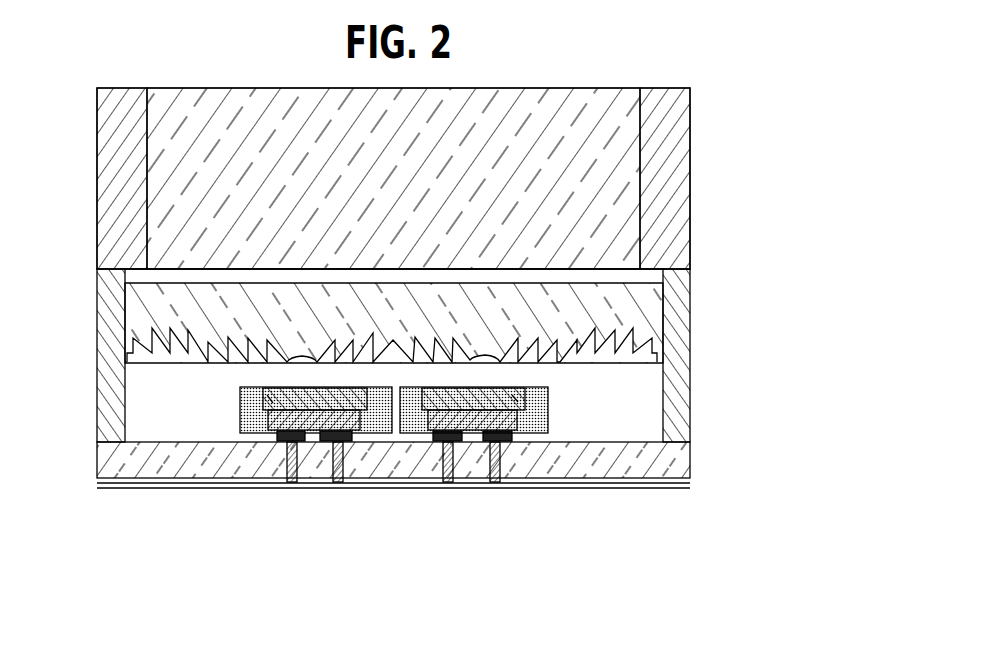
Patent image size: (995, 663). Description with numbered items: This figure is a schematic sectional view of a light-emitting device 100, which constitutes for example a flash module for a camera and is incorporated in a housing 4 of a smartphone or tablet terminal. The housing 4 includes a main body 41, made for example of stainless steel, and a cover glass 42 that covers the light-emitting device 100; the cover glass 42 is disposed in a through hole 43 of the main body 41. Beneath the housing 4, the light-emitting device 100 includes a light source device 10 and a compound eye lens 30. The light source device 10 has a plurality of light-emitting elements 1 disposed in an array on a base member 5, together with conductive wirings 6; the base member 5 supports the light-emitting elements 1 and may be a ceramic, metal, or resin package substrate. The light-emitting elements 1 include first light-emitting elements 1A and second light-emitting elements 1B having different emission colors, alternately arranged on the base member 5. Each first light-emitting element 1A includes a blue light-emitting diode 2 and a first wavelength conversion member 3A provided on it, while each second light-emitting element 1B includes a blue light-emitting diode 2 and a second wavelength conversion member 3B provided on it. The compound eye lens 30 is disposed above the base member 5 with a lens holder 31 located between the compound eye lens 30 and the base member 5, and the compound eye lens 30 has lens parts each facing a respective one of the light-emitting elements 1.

The housing 4 is at (453, 157).
The main body 41 is at (699, 178).
The cover glass 42 is at (570, 100).
The through hole 43 is at (147, 115).
The light-emitting device 100 is at (468, 424).
The lens holder 31 is at (680, 305).
The compound eye lens 30 is at (640, 320).
The base member 5 is at (667, 462).
The light source device 10 is at (393, 476).
The light-emitting element 1 is at (403, 452).
The first light-emitting element 1A is at (280, 388).
The second light-emitting element 1B is at (503, 388).
The blue light-emitting diode 2 is at (300, 432).
The first wavelength conversion member 3A is at (253, 400).
The second wavelength conversion member 3B is at (535, 400).
The conductive wiring 6 is at (445, 490).